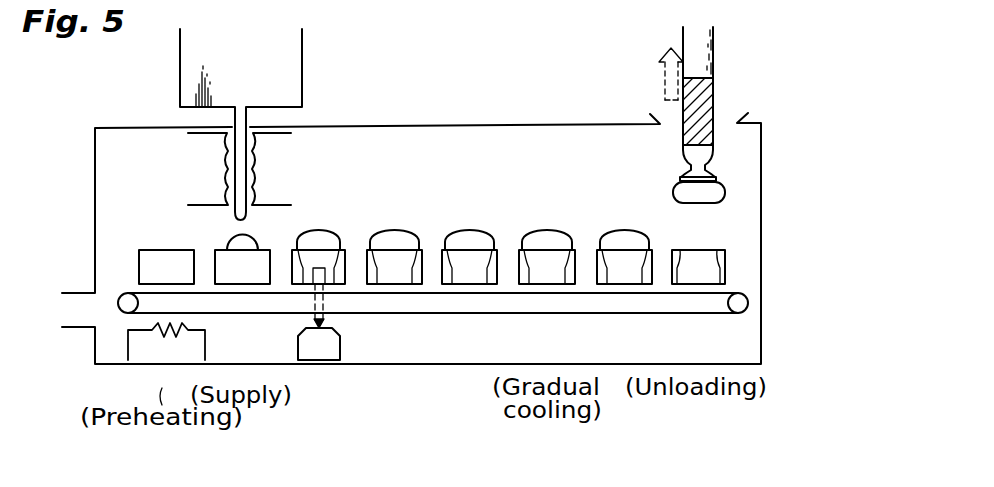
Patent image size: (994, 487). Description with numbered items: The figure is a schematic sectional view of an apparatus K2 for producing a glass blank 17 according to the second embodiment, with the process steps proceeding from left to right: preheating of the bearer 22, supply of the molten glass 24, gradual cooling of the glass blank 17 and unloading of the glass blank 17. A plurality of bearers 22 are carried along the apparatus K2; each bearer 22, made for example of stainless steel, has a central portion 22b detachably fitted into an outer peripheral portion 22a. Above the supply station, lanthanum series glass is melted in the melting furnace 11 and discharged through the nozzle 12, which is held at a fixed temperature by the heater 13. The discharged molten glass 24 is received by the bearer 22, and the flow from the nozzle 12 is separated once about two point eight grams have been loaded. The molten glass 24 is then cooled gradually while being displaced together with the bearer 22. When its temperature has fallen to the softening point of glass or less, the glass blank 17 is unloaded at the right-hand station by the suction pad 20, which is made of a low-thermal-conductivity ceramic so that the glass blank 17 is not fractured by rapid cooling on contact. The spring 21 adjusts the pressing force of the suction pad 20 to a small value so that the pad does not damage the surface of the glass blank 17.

The melting furnace 11 is at (192, 72).
The nozzle 12 is at (227, 200).
The heater 13 is at (280, 200).
The glass blank 17 is at (718, 190).
The suction pad 20 is at (693, 172).
The spring 21 is at (703, 93).
The bearer 22 is at (148, 270).
The outer peripheral portion 22a is at (343, 250).
The central portion 22b is at (340, 345).
The molten glass 24 is at (252, 240).
The apparatus K2 is at (778, 112).